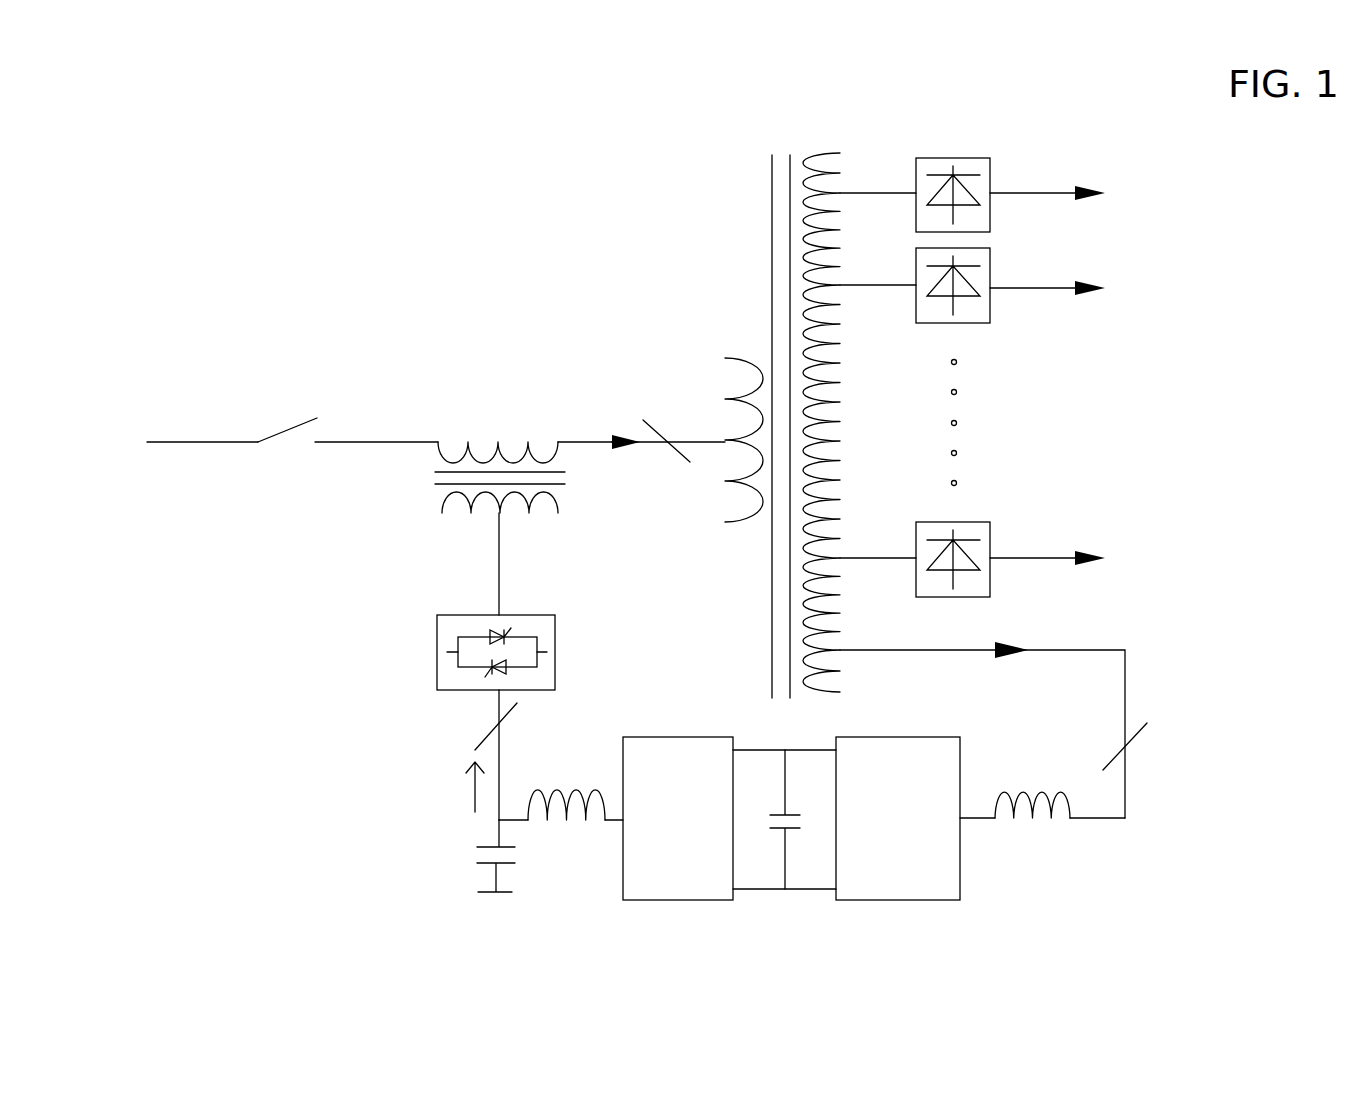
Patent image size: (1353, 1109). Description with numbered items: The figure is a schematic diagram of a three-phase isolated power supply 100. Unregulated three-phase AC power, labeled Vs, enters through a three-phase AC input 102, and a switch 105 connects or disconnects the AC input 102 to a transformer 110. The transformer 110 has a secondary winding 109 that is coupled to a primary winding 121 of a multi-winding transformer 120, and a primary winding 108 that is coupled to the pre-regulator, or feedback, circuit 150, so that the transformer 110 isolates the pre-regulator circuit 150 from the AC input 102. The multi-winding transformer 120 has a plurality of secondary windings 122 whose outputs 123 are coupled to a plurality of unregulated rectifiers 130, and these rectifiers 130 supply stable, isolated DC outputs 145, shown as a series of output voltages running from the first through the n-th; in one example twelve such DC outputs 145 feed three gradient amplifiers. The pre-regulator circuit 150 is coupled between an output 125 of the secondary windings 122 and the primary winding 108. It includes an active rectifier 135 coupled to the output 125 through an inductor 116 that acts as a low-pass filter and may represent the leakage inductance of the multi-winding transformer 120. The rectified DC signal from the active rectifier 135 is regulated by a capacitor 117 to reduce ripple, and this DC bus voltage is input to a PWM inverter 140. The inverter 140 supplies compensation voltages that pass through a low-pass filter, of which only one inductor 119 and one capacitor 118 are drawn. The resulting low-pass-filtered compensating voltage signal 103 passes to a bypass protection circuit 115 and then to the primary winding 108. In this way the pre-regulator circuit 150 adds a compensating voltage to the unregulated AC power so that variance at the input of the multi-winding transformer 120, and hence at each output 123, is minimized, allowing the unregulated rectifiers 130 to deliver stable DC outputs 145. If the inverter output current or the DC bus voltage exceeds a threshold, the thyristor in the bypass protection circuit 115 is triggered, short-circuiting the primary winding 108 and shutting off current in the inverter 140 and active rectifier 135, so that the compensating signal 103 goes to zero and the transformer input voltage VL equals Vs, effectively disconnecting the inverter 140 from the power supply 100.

The isolated power supply 100 is at (463, 175).
The three-phase AC input 102 is at (210, 401).
The low-pass-filtered compensating voltage signal 103 is at (470, 800).
The switch 105 is at (277, 483).
The primary winding 108 is at (467, 527).
The secondary winding 109 is at (541, 437).
The transformer 110 is at (486, 463).
The bypass protection circuit 115 is at (557, 648).
The inductor 116 is at (1040, 828).
The capacitor 117 is at (812, 795).
The capacitor 118 is at (478, 870).
The inductor 119 is at (577, 818).
The multi-winding transformer 120 is at (751, 387).
The primary winding 121 is at (733, 358).
The secondary windings 122 is at (840, 385).
The outputs 123 is at (886, 317).
The output 125 is at (1128, 660).
The unregulated rectifiers 130 is at (963, 150).
The active rectifier 135 is at (920, 871).
The PWM inverter 140 is at (695, 871).
The DC outputs 145 is at (1095, 212).
The pre-regulator circuit 150 is at (537, 937).